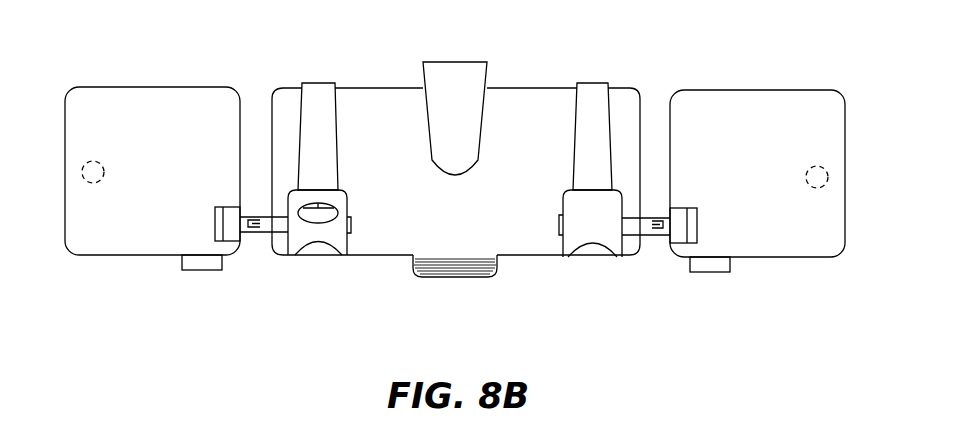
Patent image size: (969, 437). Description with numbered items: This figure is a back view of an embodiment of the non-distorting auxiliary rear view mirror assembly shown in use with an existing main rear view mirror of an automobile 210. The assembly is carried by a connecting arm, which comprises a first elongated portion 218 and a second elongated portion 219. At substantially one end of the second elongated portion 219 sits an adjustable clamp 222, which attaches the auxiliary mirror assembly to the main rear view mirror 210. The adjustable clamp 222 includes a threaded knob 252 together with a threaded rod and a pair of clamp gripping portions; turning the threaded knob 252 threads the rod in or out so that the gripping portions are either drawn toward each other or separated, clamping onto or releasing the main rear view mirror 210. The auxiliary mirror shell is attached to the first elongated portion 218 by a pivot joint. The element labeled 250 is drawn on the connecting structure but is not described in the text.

The main rear view mirror of an automobile 210 is at (400, 88).
The adjustable clamp 222 is at (312, 242).
The threaded knob 252 is at (327, 215).
The connecting pin 250 is at (253, 237).
The second elongated portion 219 is at (632, 237).
The first elongated portion 218 is at (663, 237).